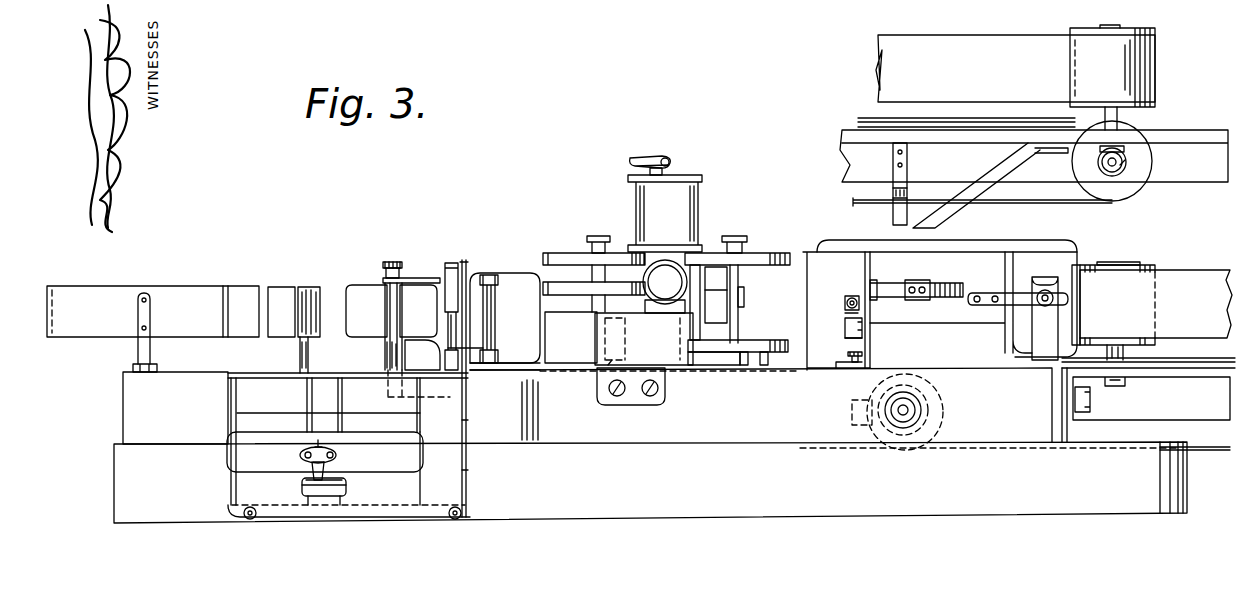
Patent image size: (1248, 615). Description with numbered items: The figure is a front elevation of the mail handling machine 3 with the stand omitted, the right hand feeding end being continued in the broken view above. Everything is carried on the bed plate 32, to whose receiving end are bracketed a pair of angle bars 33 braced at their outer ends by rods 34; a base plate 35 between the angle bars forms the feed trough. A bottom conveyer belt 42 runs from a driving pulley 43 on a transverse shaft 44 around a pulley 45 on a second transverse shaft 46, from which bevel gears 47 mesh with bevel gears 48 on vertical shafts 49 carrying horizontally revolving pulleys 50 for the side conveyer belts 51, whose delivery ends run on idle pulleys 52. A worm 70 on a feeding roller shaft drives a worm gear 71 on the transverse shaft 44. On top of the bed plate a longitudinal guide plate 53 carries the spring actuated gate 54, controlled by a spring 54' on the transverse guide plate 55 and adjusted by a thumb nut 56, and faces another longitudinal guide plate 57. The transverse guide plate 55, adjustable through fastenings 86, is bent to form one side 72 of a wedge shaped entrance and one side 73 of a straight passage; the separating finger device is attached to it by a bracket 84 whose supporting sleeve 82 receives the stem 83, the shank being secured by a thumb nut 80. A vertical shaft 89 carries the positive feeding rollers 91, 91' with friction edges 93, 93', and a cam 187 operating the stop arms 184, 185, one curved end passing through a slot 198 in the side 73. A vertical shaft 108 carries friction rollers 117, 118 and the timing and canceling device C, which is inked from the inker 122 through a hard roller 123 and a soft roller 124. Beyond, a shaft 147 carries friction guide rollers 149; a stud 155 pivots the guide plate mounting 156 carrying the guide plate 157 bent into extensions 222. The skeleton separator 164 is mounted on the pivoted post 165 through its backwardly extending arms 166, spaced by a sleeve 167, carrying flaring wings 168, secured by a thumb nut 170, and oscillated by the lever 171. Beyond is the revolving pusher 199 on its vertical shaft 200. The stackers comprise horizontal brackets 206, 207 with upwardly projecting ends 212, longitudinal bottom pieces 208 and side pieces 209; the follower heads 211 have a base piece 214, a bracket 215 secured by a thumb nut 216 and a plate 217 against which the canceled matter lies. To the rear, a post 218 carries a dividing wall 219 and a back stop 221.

The front elevation figure 3 is at (866, 352).
The bed plate 32 is at (650, 482).
The angle bars 33 is at (964, 140).
The rods 34 is at (1005, 162).
The base plate 35 is at (1170, 370).
The bottom conveyer belt 42 is at (1168, 357).
The driving pulley 43 is at (918, 408).
The transverse shaft 44 is at (908, 408).
The pulley 45 is at (1142, 192).
The transverse shaft 46 is at (1112, 176).
The bevel gears 47 is at (1125, 162).
The bevel gears 48 is at (1125, 150).
The vertical shafts 49 is at (1120, 112).
The horizontally revolving pulleys 50 is at (1120, 27).
The side conveyer belts 51 is at (1156, 48).
The idle pulleys 52 is at (1142, 268).
The longitudinal guide plate 53 is at (1018, 306).
The spring actuated gate 54 is at (951, 302).
The spring 54' is at (916, 303).
The transverse guide plate 55 is at (871, 268).
The thumb nut 56 is at (1045, 306).
The longitudinal guide plate 57 is at (965, 250).
The worm 70 is at (852, 409).
The worm gear 71 is at (930, 422).
The side of wedge shaped entrance 72 is at (940, 311).
The side of straight passage 73 is at (705, 239).
The thumb nut 80 is at (845, 300).
The vertical supporting sleeve 82 is at (845, 333).
The vertical stem 83 is at (845, 315).
The bracket 84 is at (852, 340).
The fastenings 86 is at (850, 366).
The vertical shaft 89 is at (740, 277).
The positive feeding roller 91 is at (737, 246).
The lower positive feeding roller 91' is at (779, 376).
The friction edge 93 is at (750, 283).
The friction edge 93' is at (745, 383).
The vertical shaft 108 is at (598, 283).
The friction roller 117 is at (558, 258).
The friction roller 118 is at (582, 296).
The inker 122 is at (644, 339).
The hard roller 123 is at (622, 365).
The soft roller 124 is at (608, 365).
The shaft 147 is at (466, 262).
The friction guide rollers 149 is at (451, 263).
The stud 155 is at (499, 298).
The guide plate mounting 156 is at (474, 365).
The guide plate 157 is at (505, 318).
The skeleton separator 164 is at (440, 312).
The pivoted post 165 is at (385, 262).
The backwardly extending arms 166 is at (415, 283).
The sleeve 167 is at (386, 355).
The flaring wings 168 is at (368, 311).
The thumb nut 170 is at (396, 262).
The lever 171 is at (430, 399).
The stop arm 184 is at (714, 308).
The stop arm 185 is at (708, 366).
The cam 187 is at (722, 353).
The slot 198 is at (744, 305).
The revolving pusher 199 is at (290, 288).
The vertical shaft 200 is at (300, 357).
The horizontal brackets 206 is at (250, 375).
The horizontal brackets 207 is at (441, 468).
The longitudinal bottom pieces 208 is at (230, 409).
The longitudinal side pieces 209 is at (469, 476).
The follower heads 211 is at (346, 486).
The upwardly projecting ends 212 is at (470, 272).
The base piece 214 is at (302, 490).
The bracket 215 is at (338, 455).
The thumb nut 216 is at (322, 450).
The plate 217 is at (325, 452).
The post 218 is at (151, 352).
The dividing wall 219 is at (153, 311).
The back stop 221 is at (222, 313).
The extensions 222 is at (483, 348).
The timing and canceling device C is at (571, 337).